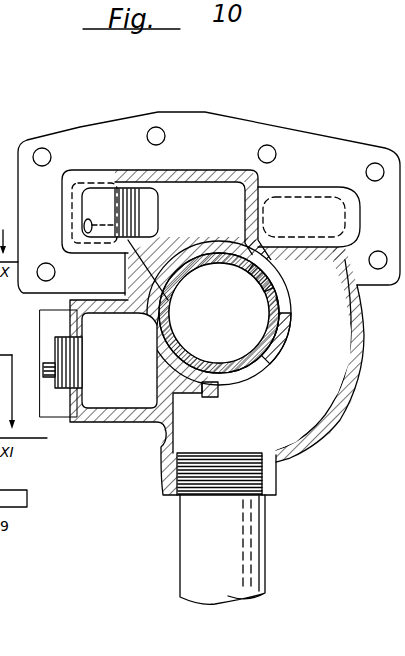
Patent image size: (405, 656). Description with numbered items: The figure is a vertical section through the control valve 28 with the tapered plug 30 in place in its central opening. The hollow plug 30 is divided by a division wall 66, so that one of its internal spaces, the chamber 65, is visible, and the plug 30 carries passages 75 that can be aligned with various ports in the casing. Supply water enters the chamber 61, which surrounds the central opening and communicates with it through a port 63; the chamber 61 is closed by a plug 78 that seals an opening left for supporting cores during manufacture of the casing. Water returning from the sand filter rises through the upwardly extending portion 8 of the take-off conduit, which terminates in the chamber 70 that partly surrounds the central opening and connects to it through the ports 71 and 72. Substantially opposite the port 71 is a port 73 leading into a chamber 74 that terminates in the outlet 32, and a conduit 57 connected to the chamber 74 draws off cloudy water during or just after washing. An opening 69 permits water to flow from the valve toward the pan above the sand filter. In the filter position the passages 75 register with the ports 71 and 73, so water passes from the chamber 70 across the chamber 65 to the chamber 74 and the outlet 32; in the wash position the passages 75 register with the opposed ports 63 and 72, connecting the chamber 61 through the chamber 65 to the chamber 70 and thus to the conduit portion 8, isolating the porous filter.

The upwardly extending portion 8 is at (187, 562).
The control valve 28 is at (360, 350).
The tapered plug 30 is at (286, 334).
The outlet 32 is at (72, 183).
The conduit 57 is at (100, 190).
The chamber 61 is at (119, 360).
The port 63 is at (147, 355).
The chamber 65 is at (262, 353).
The division wall 66 is at (262, 353).
The opening 69 is at (315, 200).
The chamber 70 is at (327, 378).
The port 71 is at (230, 393).
The port 72 is at (288, 300).
The port 73 is at (222, 250).
The chamber 74 is at (195, 190).
The passages 75 is at (262, 298).
The plug 78 is at (43, 357).